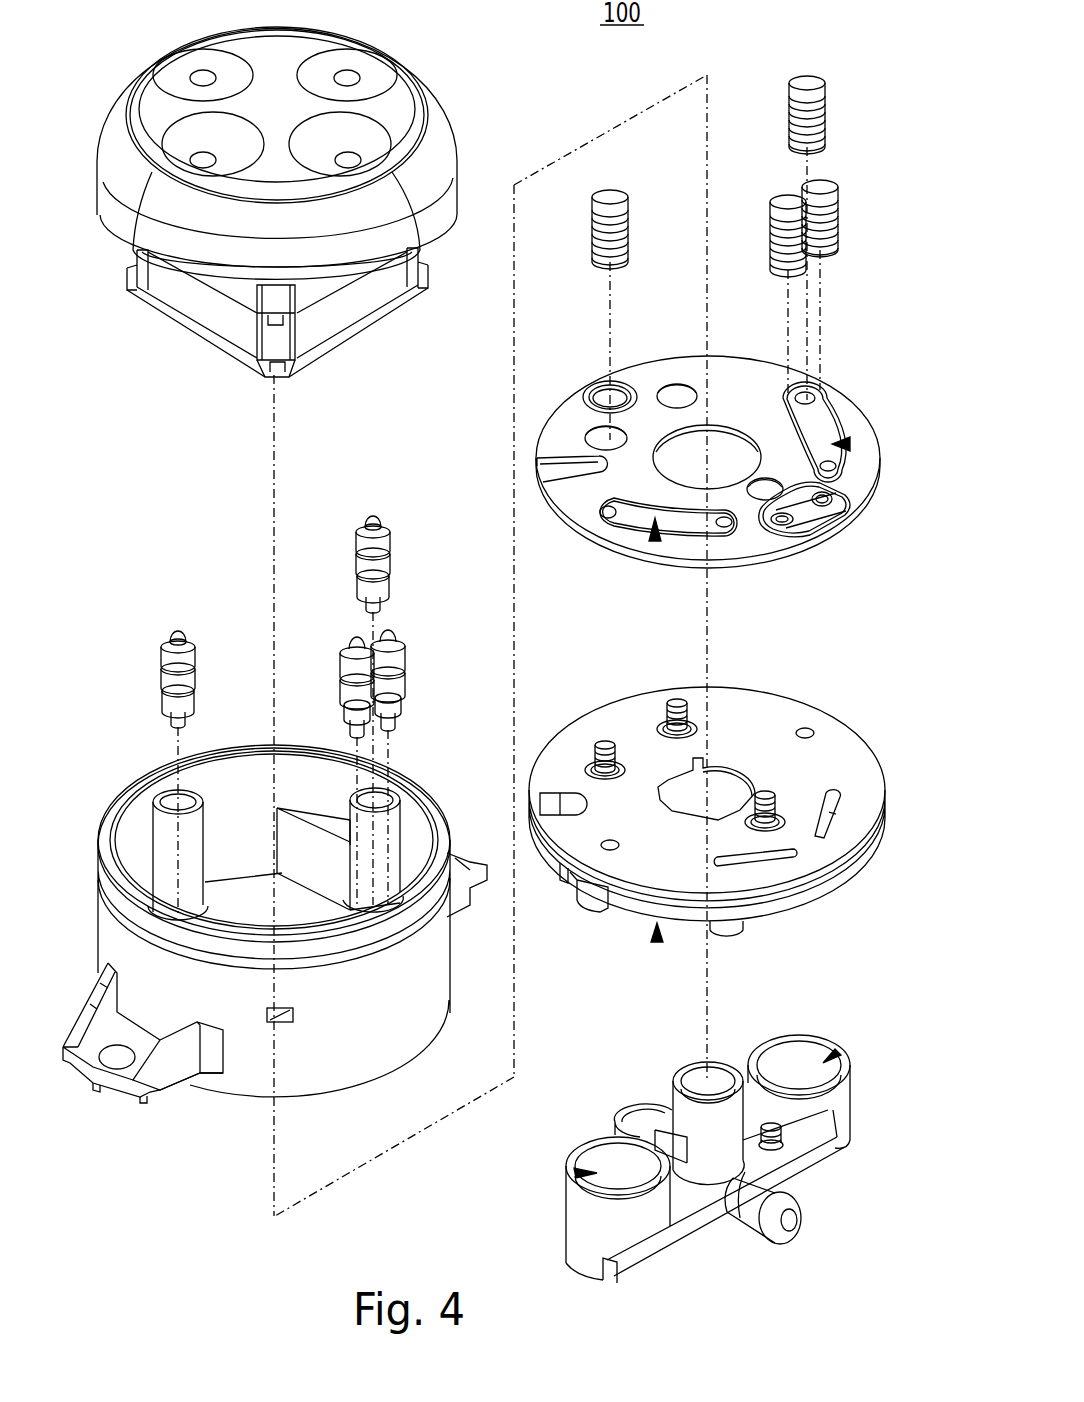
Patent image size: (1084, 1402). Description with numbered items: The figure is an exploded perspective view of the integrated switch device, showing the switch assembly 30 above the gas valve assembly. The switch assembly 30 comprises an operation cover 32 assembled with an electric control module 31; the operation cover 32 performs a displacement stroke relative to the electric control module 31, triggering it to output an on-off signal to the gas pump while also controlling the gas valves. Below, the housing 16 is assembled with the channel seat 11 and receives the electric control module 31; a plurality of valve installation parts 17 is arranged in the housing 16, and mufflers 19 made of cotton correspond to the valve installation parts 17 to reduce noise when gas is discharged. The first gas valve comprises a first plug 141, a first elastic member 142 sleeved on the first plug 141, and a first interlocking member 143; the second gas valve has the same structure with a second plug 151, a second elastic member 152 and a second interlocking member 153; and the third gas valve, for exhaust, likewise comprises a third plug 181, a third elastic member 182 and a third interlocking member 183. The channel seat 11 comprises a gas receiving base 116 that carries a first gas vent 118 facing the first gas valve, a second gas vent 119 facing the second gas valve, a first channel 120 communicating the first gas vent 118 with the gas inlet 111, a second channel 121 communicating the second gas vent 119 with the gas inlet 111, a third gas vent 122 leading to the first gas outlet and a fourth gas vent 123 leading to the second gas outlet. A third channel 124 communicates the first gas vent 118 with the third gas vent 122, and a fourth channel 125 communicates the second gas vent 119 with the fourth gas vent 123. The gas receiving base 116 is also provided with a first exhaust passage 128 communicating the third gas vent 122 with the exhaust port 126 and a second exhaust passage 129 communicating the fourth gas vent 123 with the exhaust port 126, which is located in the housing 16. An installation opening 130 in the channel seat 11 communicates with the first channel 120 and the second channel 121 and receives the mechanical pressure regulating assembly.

The switch assembly 30 is at (304, 148).
The operation cover 32 is at (163, 95).
The electric control module 31 is at (175, 295).
The first plug 141 is at (610, 195).
The first elastic member 142 is at (592, 255).
The second plug 151 is at (810, 80).
The second elastic member 152 is at (824, 124).
The third plug 181 is at (824, 190).
The third elastic member 182 is at (832, 250).
The installation opening 130 is at (740, 440).
The first gas vent 118 is at (590, 512).
The second gas vent 119 is at (822, 398).
The third gas vent 122 is at (717, 527).
The fourth gas vent 123 is at (855, 518).
The third channel 124 is at (655, 541).
The fourth channel 125 is at (850, 444).
The exhaust port 126 is at (786, 526).
The gas receiving base 116 is at (848, 745).
The first exhaust passage 128 is at (755, 862).
The second exhaust passage 129 is at (826, 818).
The channel seat 11 is at (657, 942).
The first channel 120 is at (568, 1176).
The second channel 121 is at (838, 1050).
The gas inlet 111 is at (792, 1236).
The first interlocking member 143 is at (168, 655).
The second interlocking member 153 is at (371, 515).
The third interlocking member 183 is at (352, 655).
The housing 16 is at (232, 1100).
The valve installation parts 17 is at (398, 820).
The mufflers 19 is at (320, 800).